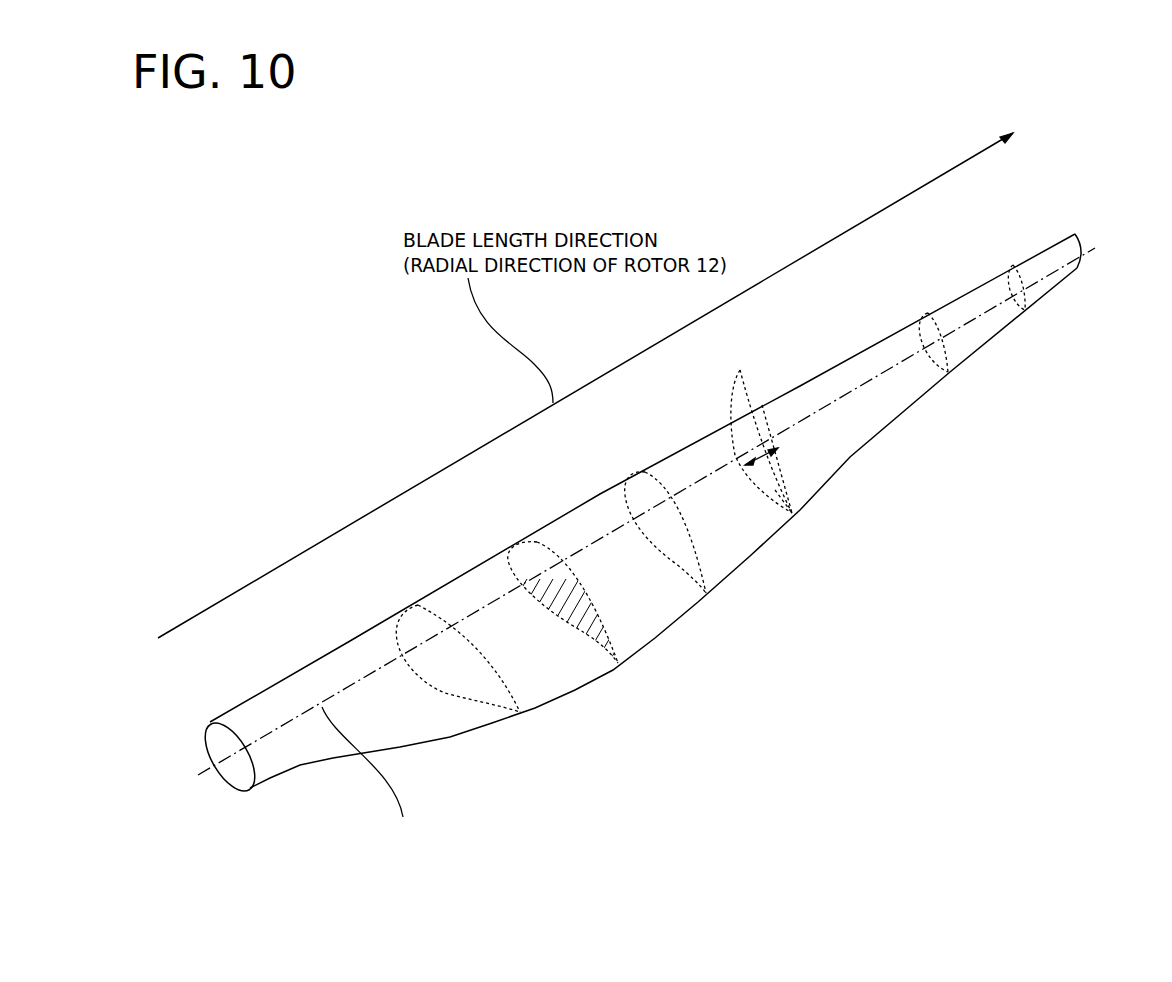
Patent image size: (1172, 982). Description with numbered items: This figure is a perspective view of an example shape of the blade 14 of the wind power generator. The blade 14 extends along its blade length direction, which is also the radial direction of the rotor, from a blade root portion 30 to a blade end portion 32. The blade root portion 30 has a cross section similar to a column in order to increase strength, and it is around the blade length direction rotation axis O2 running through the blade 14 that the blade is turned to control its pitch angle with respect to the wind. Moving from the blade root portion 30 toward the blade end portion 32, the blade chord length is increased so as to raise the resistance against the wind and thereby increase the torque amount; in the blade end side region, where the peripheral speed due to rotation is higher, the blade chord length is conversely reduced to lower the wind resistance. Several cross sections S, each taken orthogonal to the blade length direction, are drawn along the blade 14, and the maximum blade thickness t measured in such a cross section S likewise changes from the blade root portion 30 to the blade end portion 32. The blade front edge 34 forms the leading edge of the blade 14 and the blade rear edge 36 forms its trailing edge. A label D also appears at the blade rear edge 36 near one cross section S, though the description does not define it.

The blade 14 is at (905, 665).
The blade root portion 30 is at (277, 777).
The blade end portion 32 is at (1077, 273).
The blade front edge 34 is at (802, 378).
The blade rear edge 36 is at (842, 467).
The cross section S is at (633, 633).
The blade length direction rotation axis O2 is at (372, 780).
The maximum blade thickness t is at (785, 394).
The trailing edge thickness D is at (792, 518).